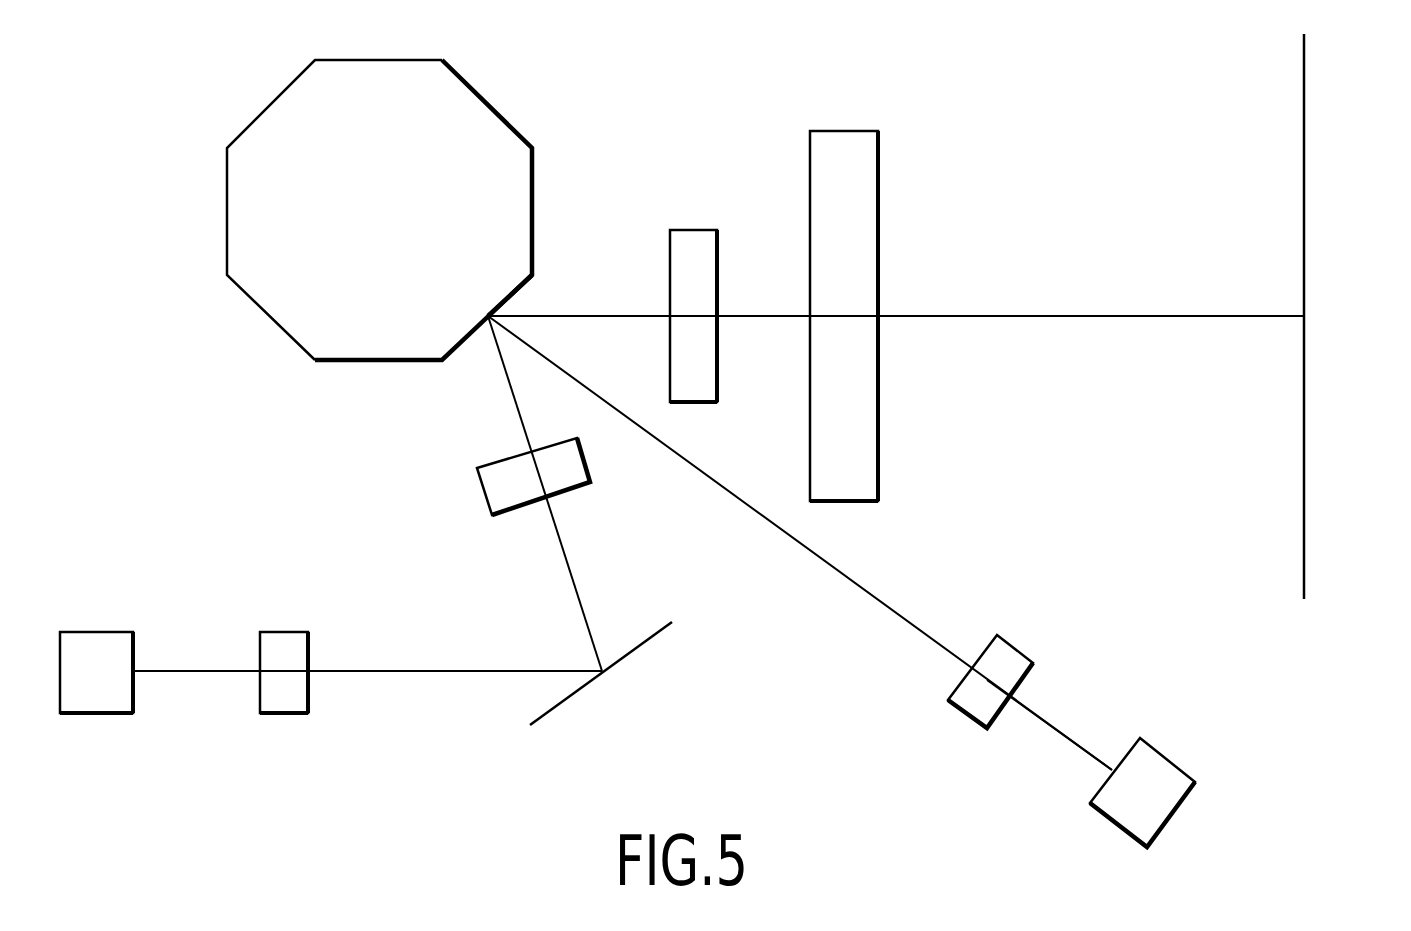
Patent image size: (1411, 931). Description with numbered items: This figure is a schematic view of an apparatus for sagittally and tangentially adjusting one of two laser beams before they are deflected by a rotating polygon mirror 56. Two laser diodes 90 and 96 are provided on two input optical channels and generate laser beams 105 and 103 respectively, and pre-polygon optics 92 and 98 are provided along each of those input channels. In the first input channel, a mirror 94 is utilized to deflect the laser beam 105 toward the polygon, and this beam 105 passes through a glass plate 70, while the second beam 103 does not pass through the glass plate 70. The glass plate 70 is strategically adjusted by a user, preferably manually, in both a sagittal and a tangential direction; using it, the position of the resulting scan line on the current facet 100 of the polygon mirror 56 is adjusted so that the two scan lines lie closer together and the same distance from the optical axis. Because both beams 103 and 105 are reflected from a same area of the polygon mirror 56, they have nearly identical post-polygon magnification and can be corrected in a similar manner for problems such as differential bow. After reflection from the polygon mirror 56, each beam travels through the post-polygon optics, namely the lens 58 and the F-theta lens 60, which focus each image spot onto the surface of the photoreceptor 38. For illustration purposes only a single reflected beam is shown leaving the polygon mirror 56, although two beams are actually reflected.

The photoreceptor 38 is at (1307, 170).
The rotating polygon mirror 56 is at (485, 93).
The lens 58 is at (690, 228).
The F-theta lens 60 is at (838, 130).
The glass plate 70 is at (480, 492).
The laser diode 90 is at (103, 718).
The pre-polygon optics 92 is at (285, 718).
The mirror 94 is at (575, 690).
The laser diode 96 is at (1168, 755).
The pre-polygon optics 98 is at (1017, 648).
The current facet 100 is at (528, 275).
The laser beam 103 is at (1057, 725).
The laser beam 105 is at (195, 668).